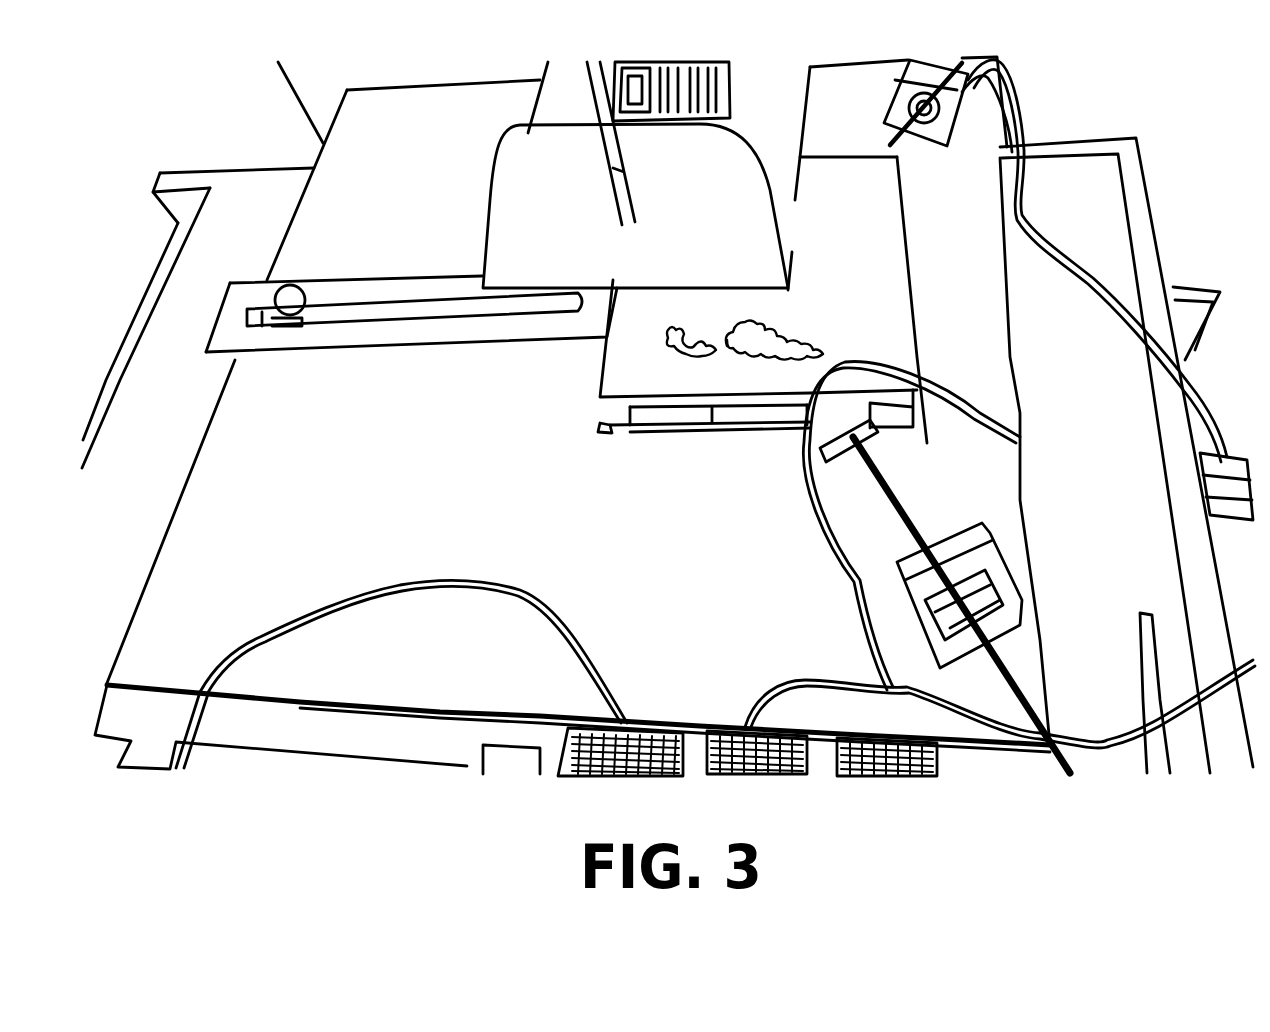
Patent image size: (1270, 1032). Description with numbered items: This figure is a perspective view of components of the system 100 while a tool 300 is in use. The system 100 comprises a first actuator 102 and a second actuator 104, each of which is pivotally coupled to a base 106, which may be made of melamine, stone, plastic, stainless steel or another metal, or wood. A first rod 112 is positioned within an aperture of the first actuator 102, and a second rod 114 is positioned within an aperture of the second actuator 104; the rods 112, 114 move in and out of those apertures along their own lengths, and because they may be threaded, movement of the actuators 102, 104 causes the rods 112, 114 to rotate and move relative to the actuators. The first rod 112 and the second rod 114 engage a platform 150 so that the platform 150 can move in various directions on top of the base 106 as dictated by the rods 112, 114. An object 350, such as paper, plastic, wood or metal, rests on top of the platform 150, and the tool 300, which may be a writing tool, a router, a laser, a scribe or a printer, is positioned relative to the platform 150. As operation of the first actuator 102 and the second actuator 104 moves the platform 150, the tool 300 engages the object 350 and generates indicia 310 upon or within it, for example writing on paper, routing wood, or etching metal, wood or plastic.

The system 100 is at (337, 440).
The first actuator 102 is at (897, 575).
The second actuator 104 is at (953, 143).
The base 106 is at (546, 570).
The first rod 112 is at (890, 482).
The second rod 114 is at (890, 140).
The platform 150 is at (633, 432).
The tool 300 is at (513, 128).
The indicia 310 is at (727, 348).
The object 350 is at (612, 333).